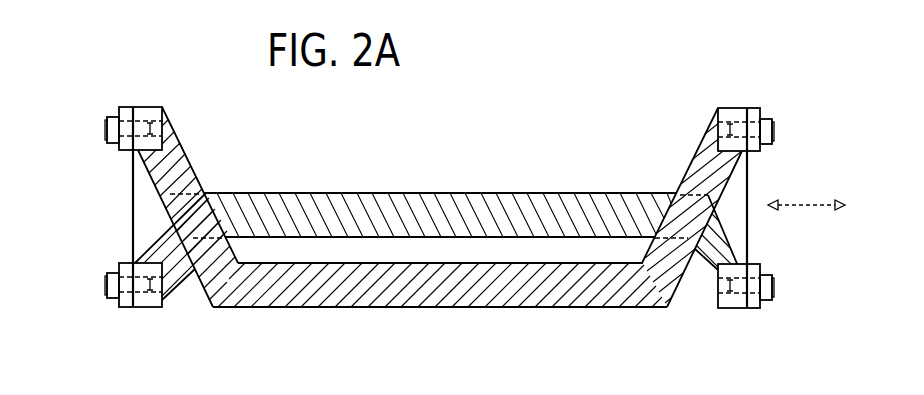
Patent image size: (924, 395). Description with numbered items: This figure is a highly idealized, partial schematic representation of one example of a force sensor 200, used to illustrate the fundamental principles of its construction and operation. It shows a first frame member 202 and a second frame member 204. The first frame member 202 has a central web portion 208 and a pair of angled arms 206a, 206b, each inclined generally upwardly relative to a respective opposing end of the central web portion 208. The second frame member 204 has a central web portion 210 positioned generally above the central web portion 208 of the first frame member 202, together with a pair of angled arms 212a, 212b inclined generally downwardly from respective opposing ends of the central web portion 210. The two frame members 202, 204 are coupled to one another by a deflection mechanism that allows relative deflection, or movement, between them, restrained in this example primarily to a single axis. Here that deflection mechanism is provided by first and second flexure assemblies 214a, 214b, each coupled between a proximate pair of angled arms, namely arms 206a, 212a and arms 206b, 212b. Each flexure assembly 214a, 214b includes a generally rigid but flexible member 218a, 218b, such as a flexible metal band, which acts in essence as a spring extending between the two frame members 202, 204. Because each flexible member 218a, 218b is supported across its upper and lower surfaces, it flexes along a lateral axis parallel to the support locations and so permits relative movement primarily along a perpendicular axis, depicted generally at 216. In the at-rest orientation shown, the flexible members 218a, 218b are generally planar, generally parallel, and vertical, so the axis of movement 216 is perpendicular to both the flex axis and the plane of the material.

The force sensor 200 is at (584, 108).
The first frame member 202 is at (512, 314).
The second frame member 204 is at (454, 188).
The angled arm 206a is at (697, 158).
The angled arm 206b is at (180, 157).
The central web portion 208 is at (380, 308).
The central web portion 210 is at (320, 193).
The angled arm 212a is at (730, 238).
The angled arm 212b is at (138, 230).
The first flexure assembly 214a is at (760, 190).
The second flexure assembly 214b is at (118, 190).
The axis of movement 216 is at (808, 203).
The flexible member 218a is at (750, 251).
The flexible member 218b is at (133, 245).